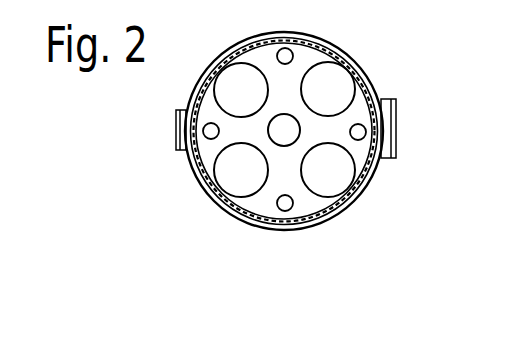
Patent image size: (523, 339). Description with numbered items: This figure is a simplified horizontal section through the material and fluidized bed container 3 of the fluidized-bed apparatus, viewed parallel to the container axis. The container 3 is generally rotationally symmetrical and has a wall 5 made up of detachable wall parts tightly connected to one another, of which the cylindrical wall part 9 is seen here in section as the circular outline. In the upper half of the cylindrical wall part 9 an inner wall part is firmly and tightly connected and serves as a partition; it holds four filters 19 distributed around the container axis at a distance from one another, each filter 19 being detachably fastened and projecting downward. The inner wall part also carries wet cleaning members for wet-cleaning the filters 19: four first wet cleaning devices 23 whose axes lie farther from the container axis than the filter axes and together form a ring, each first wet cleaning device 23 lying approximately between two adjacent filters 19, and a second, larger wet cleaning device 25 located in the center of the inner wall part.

The material and fluidized bed container 3 is at (245, 35).
The wall 5 is at (346, 52).
The cylindrical wall part 9 is at (369, 76).
The filter 19 is at (349, 92).
The first wet cleaning device 23 is at (289, 55).
The second wet cleaning device 25 is at (278, 133).